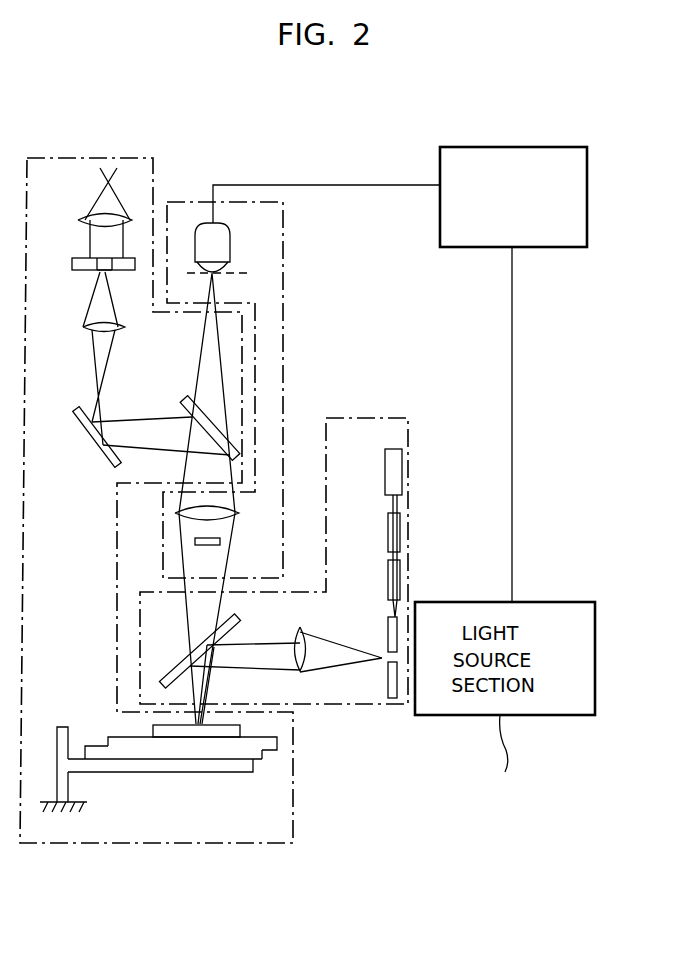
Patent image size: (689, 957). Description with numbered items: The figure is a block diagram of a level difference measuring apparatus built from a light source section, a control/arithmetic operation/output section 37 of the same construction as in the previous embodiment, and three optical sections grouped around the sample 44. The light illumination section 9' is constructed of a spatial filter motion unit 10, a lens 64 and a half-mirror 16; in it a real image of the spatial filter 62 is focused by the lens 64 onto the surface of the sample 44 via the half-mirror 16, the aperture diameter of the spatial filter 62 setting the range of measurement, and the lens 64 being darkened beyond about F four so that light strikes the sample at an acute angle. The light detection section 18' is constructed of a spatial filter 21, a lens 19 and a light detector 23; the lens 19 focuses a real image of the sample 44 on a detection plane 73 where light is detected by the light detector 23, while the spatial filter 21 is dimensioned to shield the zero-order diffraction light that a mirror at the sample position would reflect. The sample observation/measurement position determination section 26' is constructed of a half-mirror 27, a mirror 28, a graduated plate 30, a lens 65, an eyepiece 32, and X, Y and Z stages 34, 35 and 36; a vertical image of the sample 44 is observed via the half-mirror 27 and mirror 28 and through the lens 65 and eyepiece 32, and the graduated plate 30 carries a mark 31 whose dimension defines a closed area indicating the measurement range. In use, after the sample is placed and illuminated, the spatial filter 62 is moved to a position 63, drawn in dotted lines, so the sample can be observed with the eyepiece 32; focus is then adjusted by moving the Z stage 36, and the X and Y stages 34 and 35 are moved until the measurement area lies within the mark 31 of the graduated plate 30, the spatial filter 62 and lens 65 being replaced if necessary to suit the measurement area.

The sample observation/measurement position determination section 26' is at (156, 533).
The light detection section 18' is at (256, 390).
The light illumination section 9' is at (274, 591).
The control/arithmetic operation/output section 37 is at (587, 217).
The eyepiece 32 is at (90, 215).
The graduated plate 30 is at (72, 262).
The mark 31 is at (98, 272).
The lens 65 is at (88, 330).
The mirror 28 is at (88, 447).
The half-mirror 27 is at (187, 400).
The light detector 23 is at (230, 230).
The detection plane 73 is at (250, 274).
The lens 19 is at (239, 513).
The spatial filter 21 is at (220, 542).
The half-mirror 16 is at (238, 618).
The lens 64 is at (305, 628).
The spatial filter motion unit 10 is at (388, 477).
The position 63 is at (388, 535).
The spatial filter 62 is at (390, 700).
The sample 44 is at (240, 725).
The X stage 34 is at (107, 736).
The Z stage 36 is at (145, 773).
The Y stage 35 is at (84, 747).